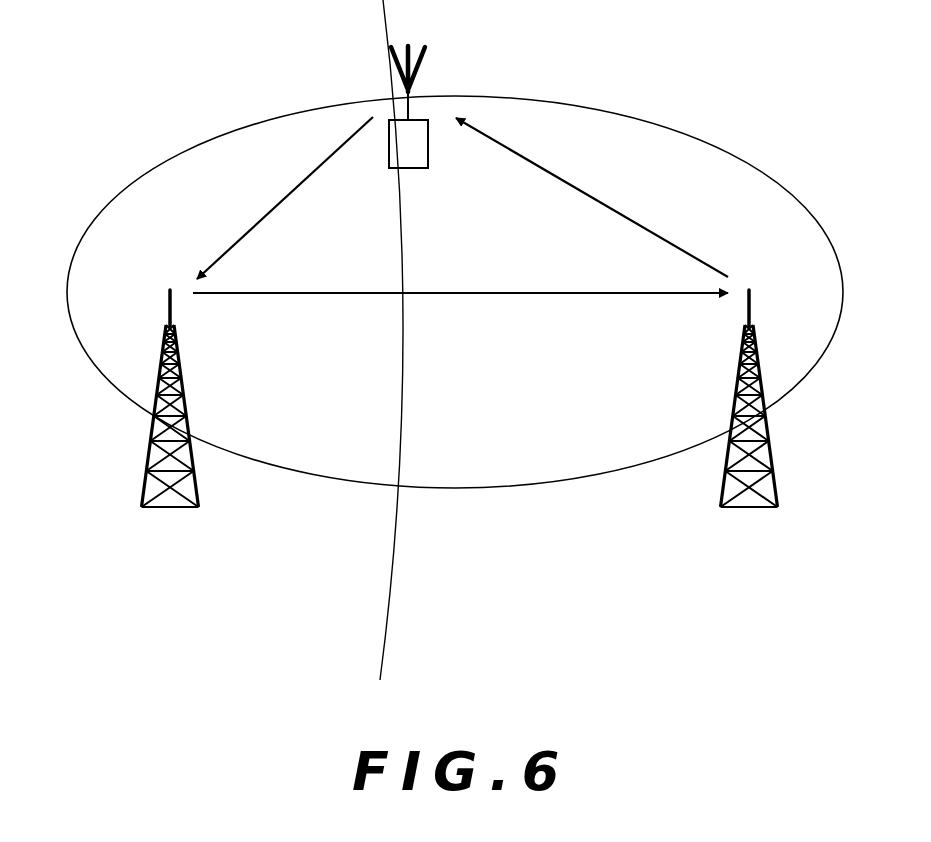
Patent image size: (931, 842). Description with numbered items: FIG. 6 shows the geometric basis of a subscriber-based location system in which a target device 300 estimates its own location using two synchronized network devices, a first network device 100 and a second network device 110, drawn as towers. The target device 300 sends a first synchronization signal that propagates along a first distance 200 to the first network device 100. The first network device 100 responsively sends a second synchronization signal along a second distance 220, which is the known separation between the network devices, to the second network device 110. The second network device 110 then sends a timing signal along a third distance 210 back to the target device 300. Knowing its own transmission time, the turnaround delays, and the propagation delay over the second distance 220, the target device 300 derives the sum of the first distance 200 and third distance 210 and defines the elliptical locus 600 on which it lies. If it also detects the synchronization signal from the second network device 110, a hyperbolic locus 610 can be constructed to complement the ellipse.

The first network device 100 is at (150, 465).
The second network device 110 is at (773, 457).
The first distance 200 is at (299, 186).
The third distance 210 is at (578, 187).
The second distance 220 is at (555, 292).
The target device 300 is at (428, 160).
The elliptical locus 600 is at (735, 152).
The hyperbolic locus 610 is at (392, 600).